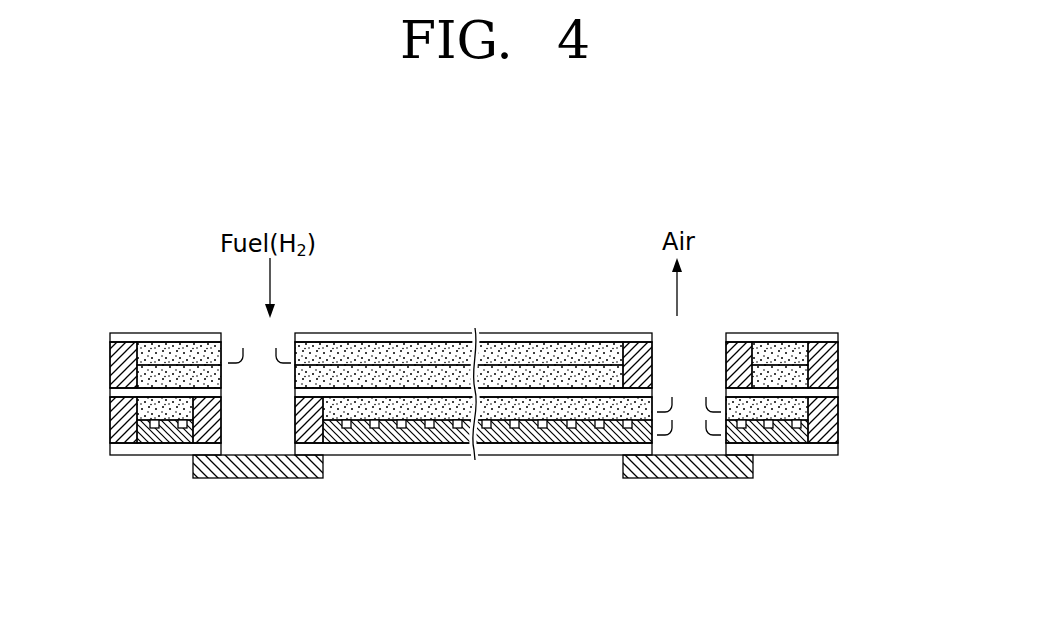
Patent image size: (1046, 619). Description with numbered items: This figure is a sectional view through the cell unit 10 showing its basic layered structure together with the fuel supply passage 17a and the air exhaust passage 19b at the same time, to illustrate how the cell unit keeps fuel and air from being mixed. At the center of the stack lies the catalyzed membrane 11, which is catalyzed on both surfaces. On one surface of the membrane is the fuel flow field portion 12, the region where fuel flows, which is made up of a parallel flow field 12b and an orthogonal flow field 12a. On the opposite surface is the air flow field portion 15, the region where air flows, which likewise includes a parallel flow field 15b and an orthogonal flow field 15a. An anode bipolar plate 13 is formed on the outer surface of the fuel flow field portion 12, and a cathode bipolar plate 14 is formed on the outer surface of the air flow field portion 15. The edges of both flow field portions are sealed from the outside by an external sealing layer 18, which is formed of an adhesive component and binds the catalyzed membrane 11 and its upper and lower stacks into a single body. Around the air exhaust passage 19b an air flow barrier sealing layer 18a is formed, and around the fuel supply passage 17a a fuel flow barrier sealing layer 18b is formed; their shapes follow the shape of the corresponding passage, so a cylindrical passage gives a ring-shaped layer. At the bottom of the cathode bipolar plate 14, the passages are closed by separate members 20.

The cell unit 10 is at (842, 192).
The catalyzed membrane 11 is at (838, 392).
The fuel flow field portion 12 is at (420, 283).
The orthogonal flow field 12a is at (423, 375).
The parallel flow field 12b is at (365, 355).
The anode bipolar plate 13 is at (830, 336).
The cathode bipolar plate 14 is at (782, 455).
The air flow field portion 15 is at (453, 528).
The orthogonal flow field 15a is at (390, 417).
The parallel flow field 15b is at (443, 443).
The fuel supply passage 17a is at (285, 418).
The external sealing layer 18 is at (117, 417).
The air flow barrier sealing layer 18a is at (623, 352).
The fuel flow barrier sealing layer 18b is at (222, 437).
The air exhaust passage 19b is at (710, 370).
The separate member 20 is at (235, 470).